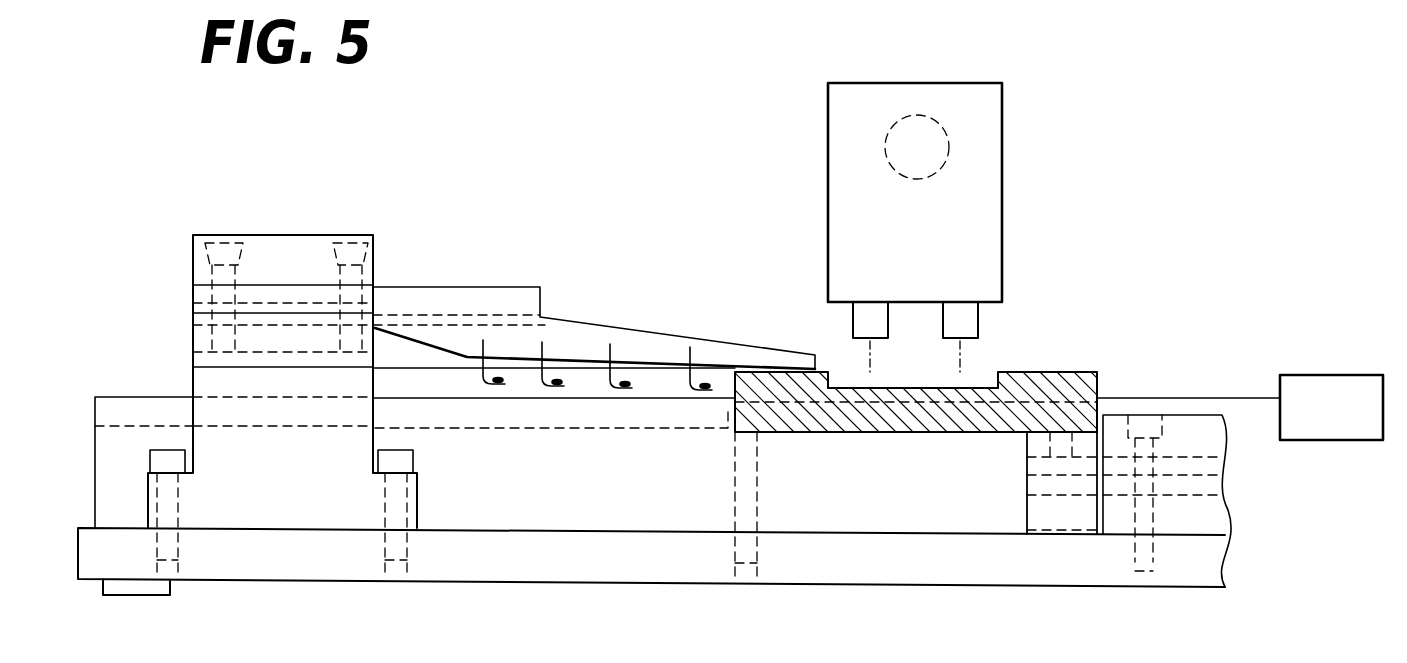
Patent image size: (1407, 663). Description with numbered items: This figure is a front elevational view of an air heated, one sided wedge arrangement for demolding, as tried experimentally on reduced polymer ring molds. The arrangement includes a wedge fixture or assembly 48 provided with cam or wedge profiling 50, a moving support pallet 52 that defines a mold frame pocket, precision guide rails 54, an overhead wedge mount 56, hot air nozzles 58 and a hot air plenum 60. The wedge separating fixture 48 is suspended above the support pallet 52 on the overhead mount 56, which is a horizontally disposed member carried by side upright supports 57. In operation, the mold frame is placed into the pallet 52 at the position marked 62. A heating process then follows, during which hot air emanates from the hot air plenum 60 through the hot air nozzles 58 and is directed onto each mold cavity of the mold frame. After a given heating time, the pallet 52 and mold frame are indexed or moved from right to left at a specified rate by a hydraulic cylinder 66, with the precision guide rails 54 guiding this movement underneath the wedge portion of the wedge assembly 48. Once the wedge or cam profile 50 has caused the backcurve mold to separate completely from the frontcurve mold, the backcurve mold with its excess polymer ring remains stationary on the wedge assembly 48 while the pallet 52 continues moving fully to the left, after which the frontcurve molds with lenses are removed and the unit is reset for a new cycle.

The wedge fixture 48 is at (577, 360).
The cam or wedge profiling 50 is at (510, 352).
The moving support pallet 52 is at (1025, 385).
The precision guide rails 54 is at (558, 432).
The overhead wedge mount 56 is at (281, 285).
The side upright support 57 is at (190, 380).
The hot air nozzles 58 is at (942, 323).
The hot air plenum 60 is at (955, 215).
The position 62 is at (932, 378).
The hydraulic cylinder 66 is at (1345, 375).